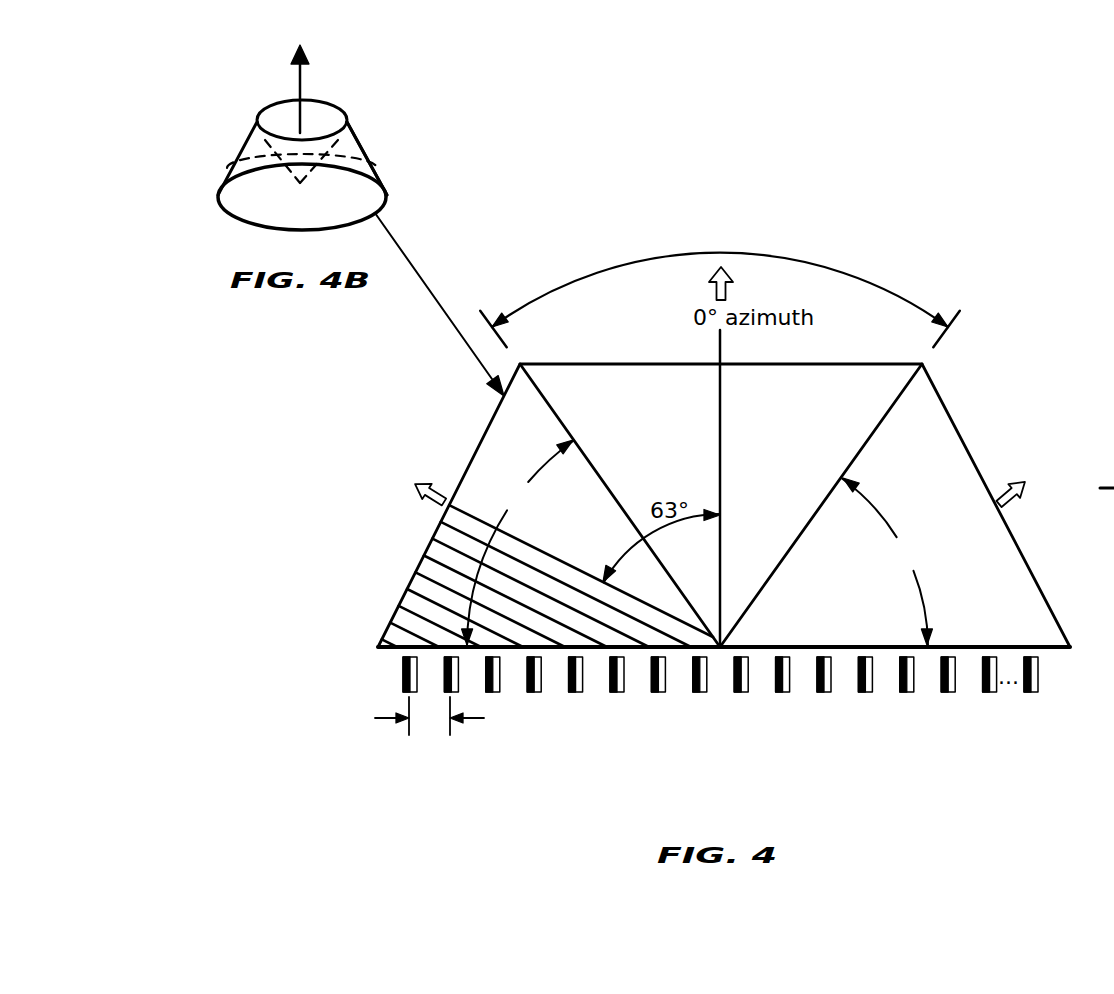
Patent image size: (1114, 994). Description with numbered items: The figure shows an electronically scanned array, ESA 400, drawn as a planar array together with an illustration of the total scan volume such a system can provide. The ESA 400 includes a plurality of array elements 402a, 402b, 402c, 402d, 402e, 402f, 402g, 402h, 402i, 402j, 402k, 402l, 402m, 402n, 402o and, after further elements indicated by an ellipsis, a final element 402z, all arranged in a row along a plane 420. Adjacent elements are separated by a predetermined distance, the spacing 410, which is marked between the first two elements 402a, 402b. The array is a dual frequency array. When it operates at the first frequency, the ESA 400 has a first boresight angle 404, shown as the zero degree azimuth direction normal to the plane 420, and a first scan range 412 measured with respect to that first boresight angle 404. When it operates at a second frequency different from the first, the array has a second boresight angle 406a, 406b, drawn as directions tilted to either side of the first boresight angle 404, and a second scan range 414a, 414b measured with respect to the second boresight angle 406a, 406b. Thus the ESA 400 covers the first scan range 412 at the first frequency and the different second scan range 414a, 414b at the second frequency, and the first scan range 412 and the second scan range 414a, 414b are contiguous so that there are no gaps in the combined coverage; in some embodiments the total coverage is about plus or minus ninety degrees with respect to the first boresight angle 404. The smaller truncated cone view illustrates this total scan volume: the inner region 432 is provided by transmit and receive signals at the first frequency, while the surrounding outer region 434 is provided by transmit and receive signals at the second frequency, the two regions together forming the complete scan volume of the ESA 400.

In FIG. 4, the ESA 400 is at (633, 160).
In FIG. 4, the array element 402a is at (403, 672).
In FIG. 4, the array element 402b is at (443, 688).
In FIG. 4, the array element 402c is at (491, 694).
In FIG. 4, the array element 402d is at (528, 694).
In FIG. 4, the array element 402e is at (569, 694).
In FIG. 4, the array element 402f is at (610, 694).
In FIG. 4, the array element 402g is at (652, 694).
In FIG. 4, the array element 402h is at (693, 694).
In FIG. 4, the array element 402i is at (736, 694).
In FIG. 4, the array element 402j is at (777, 694).
In FIG. 4, the array element 402k is at (819, 694).
In FIG. 4, the array element 402l is at (859, 694).
In FIG. 4, the array element 402m is at (902, 694).
In FIG. 4, the array element 402n is at (943, 694).
In FIG. 4, the array element 402o is at (984, 694).
In FIG. 4, the array element 402z is at (1027, 694).
In FIG. 4B, the first boresight angle 404 is at (298, 97).
In FIG. 4, the first boresight angle 404 is at (715, 287).
In FIG. 4, the second boresight angle 406a is at (438, 504).
In FIG. 4, the second boresight angle 406b is at (1010, 507).
In FIG. 4, the spacing 410 is at (425, 723).
In FIG. 4, the first scan range 412 is at (720, 282).
In FIG. 4, the second scan range 414a is at (591, 505).
In FIG. 4, the second scan range 414b is at (827, 505).
In FIG. 4, the plane 420 is at (1057, 652).
In FIG. 4B, the region 432 is at (322, 127).
In FIG. 4B, the region 434 is at (364, 148).